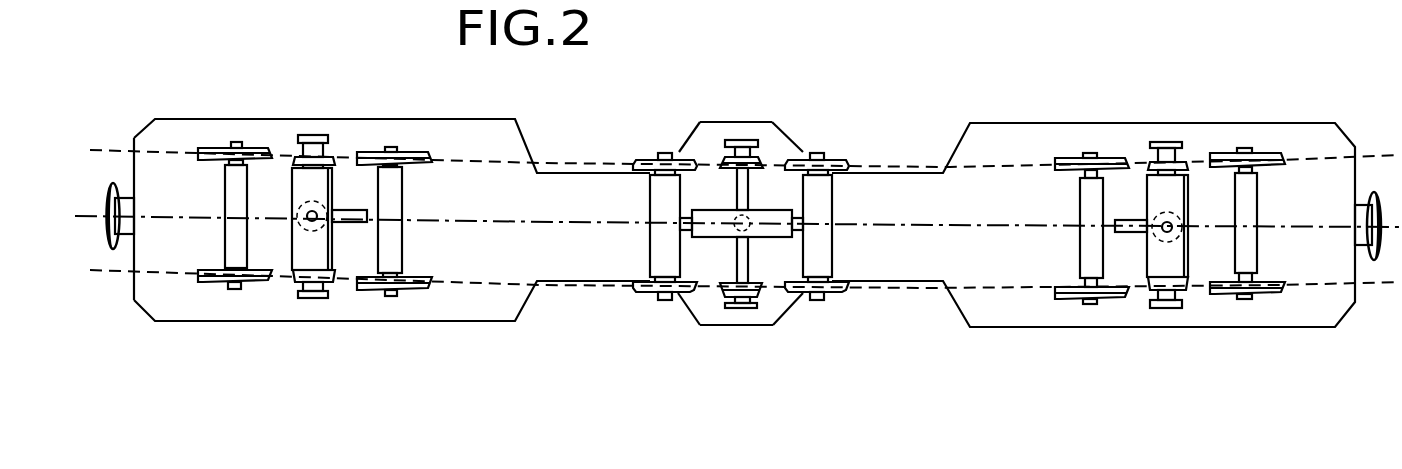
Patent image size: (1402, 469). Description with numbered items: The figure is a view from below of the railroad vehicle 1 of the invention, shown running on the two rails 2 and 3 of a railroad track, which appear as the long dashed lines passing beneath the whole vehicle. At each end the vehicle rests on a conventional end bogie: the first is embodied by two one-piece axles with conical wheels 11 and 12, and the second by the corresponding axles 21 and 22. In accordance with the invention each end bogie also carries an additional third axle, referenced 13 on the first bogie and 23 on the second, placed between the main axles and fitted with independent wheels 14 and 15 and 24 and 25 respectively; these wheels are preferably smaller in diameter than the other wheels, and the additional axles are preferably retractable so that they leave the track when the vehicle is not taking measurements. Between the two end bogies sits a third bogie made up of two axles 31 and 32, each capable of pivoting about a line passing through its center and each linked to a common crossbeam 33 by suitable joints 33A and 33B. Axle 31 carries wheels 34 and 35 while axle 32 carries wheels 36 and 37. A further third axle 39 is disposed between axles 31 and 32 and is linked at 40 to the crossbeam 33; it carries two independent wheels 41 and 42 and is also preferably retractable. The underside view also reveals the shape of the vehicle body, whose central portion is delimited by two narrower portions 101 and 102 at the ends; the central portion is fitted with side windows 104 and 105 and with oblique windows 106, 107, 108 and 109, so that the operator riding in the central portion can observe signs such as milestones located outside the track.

The railroad vehicle 1 is at (485, 112).
The rail 2 is at (167, 150).
The rail 3 is at (162, 273).
The one-piece axle with conical wheels 11 is at (233, 242).
The one-piece axle with conical wheels 12 is at (390, 252).
The third axle 13 is at (330, 188).
The independent wheel 14 is at (302, 157).
The independent wheel 15 is at (332, 285).
The one-piece axle with conical wheels 21 is at (1090, 252).
The one-piece axle with conical wheels 22 is at (1248, 253).
The third axle 23 is at (1180, 193).
The independent wheel 24 is at (1153, 160).
The independent wheel 25 is at (1187, 290).
The axle 31 is at (663, 247).
The axle 32 is at (818, 254).
The crossbeam 33 is at (760, 238).
The joint 33A is at (684, 214).
The joint 33B is at (797, 220).
The wheel 34 is at (645, 158).
The wheel 35 is at (648, 287).
The wheel 36 is at (837, 163).
The wheel 37 is at (822, 292).
The third axle 39 is at (737, 188).
The link 40 is at (720, 292).
The independent wheel 41 is at (760, 156).
The independent wheel 42 is at (733, 240).
The narrower portion 101 is at (559, 192).
The narrower portion 102 is at (926, 193).
The side window 104 is at (743, 122).
The side window 105 is at (742, 327).
The oblique window 106 is at (690, 132).
The oblique window 107 is at (782, 131).
The oblique window 108 is at (678, 303).
The oblique window 109 is at (793, 308).